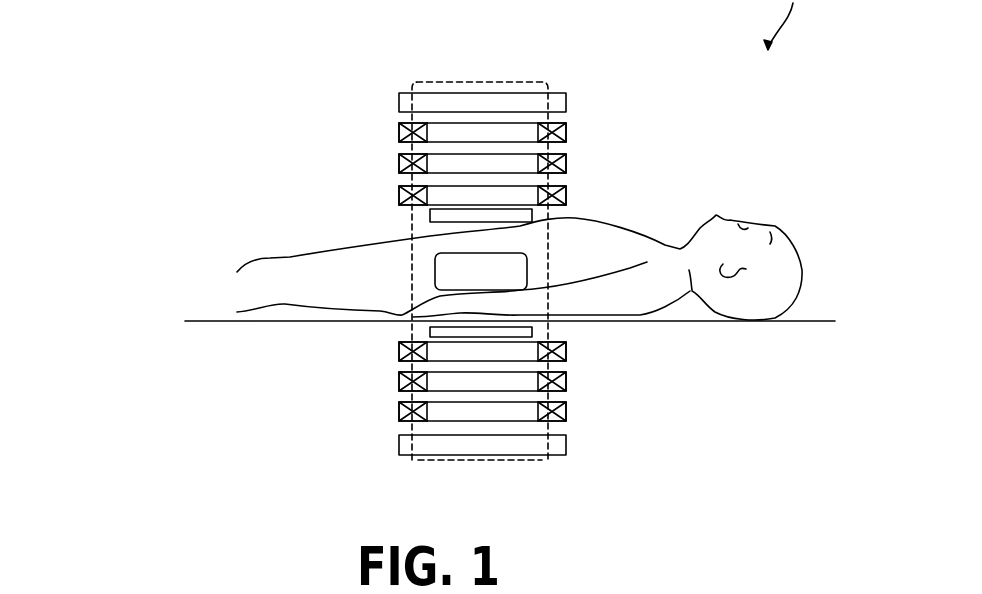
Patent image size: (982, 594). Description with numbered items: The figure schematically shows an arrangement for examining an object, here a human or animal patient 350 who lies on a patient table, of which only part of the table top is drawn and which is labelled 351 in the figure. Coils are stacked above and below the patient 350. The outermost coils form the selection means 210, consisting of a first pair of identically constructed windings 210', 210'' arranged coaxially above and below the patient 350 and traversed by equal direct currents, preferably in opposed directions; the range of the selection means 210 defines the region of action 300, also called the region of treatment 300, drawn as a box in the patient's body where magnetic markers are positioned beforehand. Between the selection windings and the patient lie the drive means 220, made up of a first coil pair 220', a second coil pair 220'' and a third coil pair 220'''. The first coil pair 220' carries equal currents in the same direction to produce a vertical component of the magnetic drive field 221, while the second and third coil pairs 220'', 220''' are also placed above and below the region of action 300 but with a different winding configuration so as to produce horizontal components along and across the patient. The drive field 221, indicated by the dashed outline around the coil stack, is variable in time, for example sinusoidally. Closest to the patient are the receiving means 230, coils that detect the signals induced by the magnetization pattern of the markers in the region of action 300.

The selection means 210 is at (340, 234).
The first winding of selection coil pair 210' is at (413, 99).
The second winding of selection coil pair 210'' is at (413, 443).
The drive means 220 is at (340, 268).
The first coil pair 220' is at (435, 269).
The second coil pair 220'' is at (530, 266).
The third coil pair 220''' is at (429, 268).
The magnetic drive field 221 is at (477, 82).
The receiving means 230 is at (430, 215).
The region of action 300 is at (500, 284).
The patient 350 is at (250, 275).
The patient table 351 is at (793, 322).